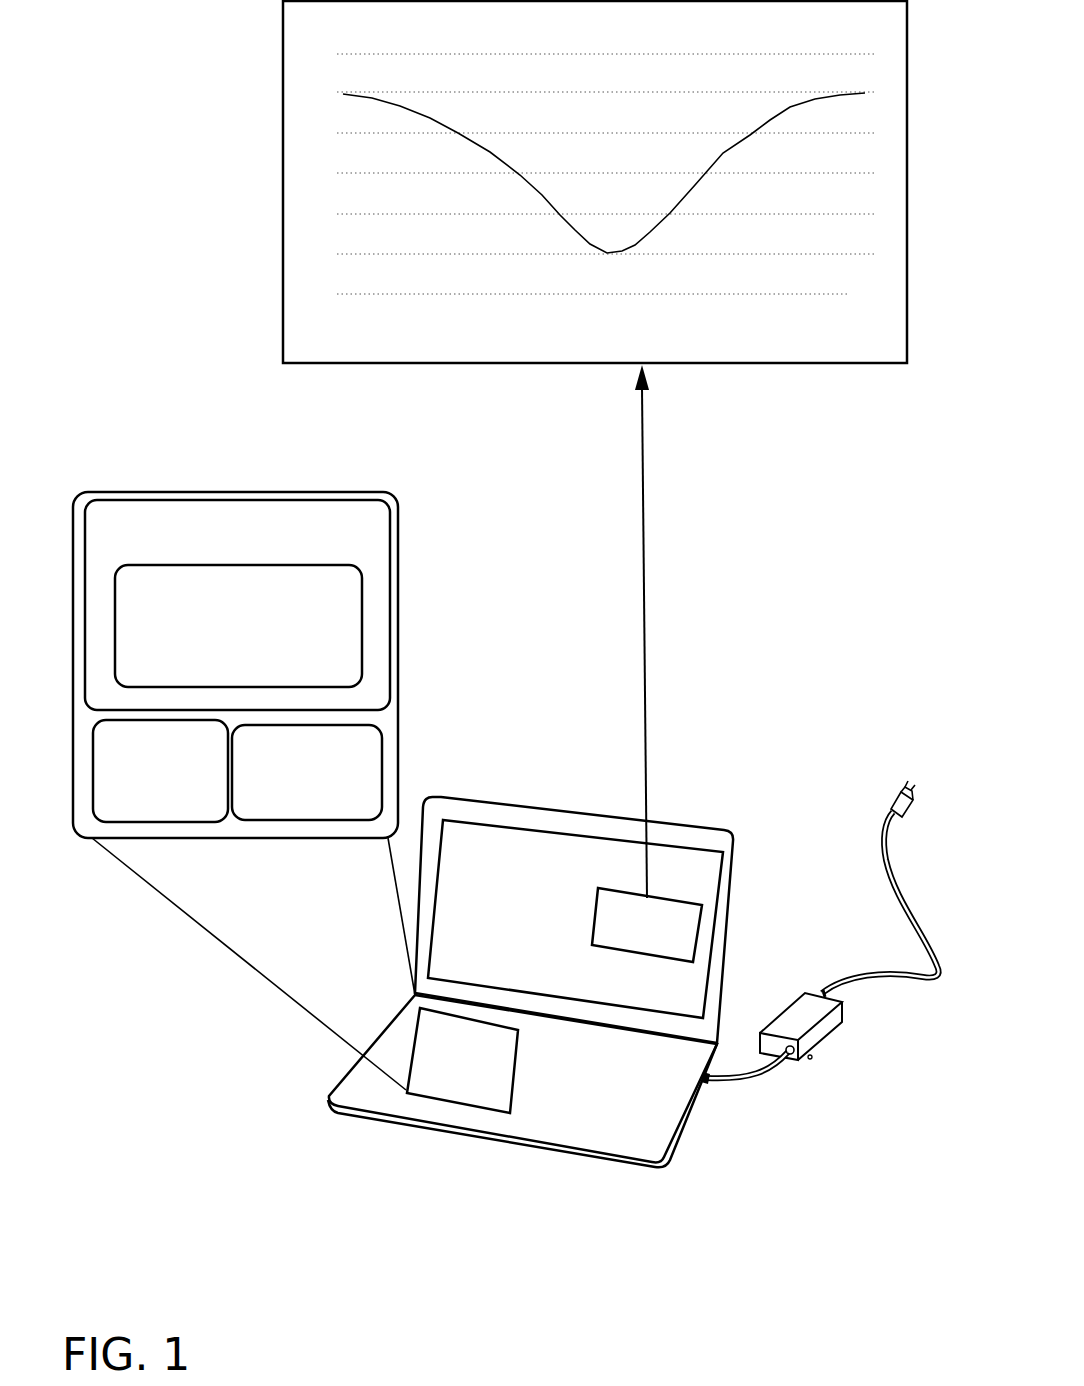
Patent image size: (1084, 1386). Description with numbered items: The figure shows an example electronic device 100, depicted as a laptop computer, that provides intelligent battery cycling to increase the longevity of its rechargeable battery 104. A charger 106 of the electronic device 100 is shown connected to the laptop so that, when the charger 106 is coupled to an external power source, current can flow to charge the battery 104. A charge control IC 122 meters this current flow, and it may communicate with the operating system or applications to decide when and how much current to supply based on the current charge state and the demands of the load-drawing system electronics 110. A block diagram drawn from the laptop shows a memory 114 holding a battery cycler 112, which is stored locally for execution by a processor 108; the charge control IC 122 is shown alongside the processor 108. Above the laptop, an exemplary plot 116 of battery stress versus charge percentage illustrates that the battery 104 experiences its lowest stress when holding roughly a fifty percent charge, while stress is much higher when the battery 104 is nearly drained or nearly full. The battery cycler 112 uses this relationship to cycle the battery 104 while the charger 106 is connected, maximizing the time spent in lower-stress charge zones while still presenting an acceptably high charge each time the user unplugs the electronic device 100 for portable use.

The electronic device 100 is at (575, 912).
The battery 104 is at (624, 942).
The charger 106 is at (820, 953).
The processor 108 is at (289, 799).
The load-drawing system electronics 110 is at (437, 1069).
The battery cycler 112 is at (219, 651).
The memory 114 is at (223, 532).
The plot 116 is at (539, 182).
The charge control IC 122 is at (141, 812).